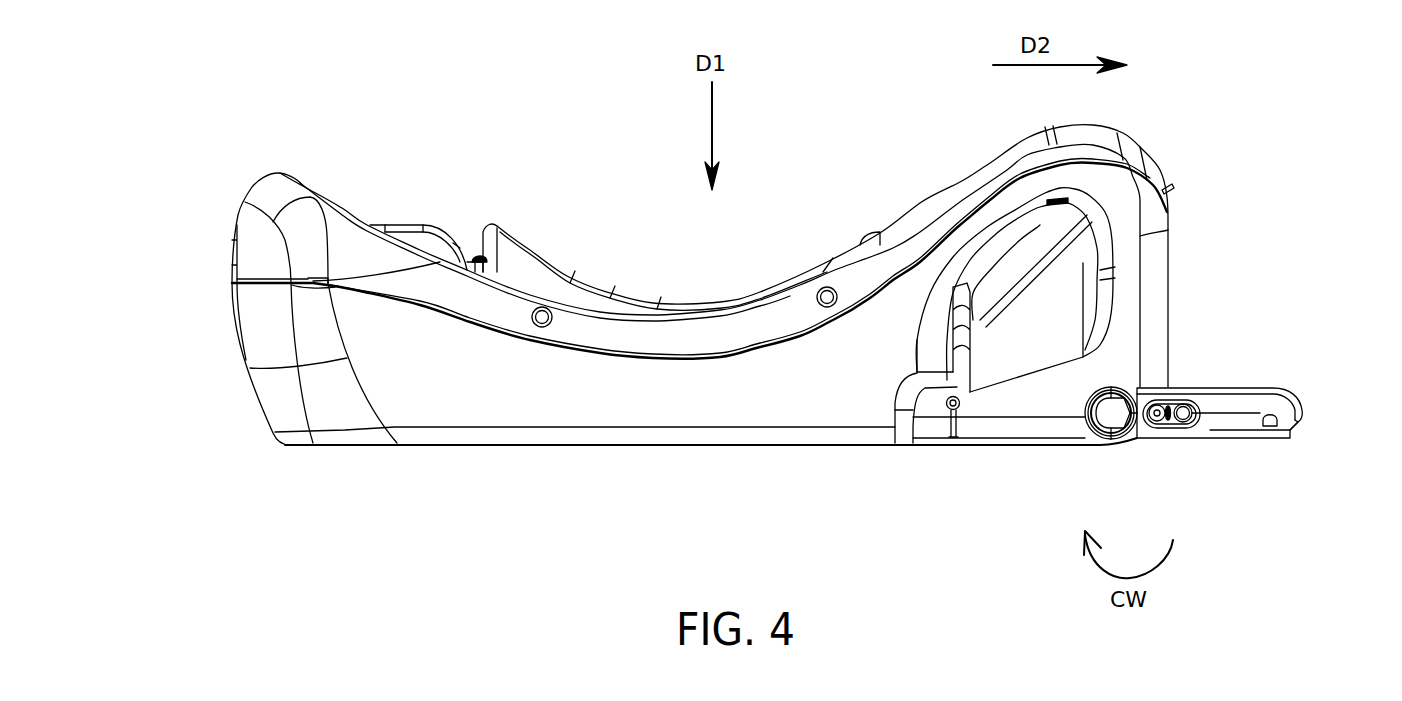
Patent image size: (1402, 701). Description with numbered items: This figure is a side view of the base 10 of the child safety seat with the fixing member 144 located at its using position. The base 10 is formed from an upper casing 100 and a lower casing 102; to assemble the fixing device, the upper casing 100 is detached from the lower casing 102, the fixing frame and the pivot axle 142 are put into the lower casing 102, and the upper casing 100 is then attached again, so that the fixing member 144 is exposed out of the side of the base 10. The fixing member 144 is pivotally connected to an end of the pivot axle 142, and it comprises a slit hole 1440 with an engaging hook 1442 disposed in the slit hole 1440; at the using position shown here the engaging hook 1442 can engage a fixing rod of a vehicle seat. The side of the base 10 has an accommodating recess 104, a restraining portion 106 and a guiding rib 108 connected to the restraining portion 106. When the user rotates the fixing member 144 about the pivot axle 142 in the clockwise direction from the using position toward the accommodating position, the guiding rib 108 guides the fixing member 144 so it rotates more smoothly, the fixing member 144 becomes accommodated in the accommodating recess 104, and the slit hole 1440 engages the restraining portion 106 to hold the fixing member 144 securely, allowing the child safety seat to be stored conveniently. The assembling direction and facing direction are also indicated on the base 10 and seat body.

The base 10 is at (158, 170).
The upper casing 100 is at (245, 220).
The lower casing 102 is at (237, 325).
The accommodating recess 104 is at (1040, 428).
The restraining portion 106 is at (960, 406).
The guiding rib 108 is at (948, 422).
The pivot axle 142 is at (1113, 420).
The fixing member 144 is at (1225, 387).
The slit hole 1440 is at (1298, 421).
The engaging hook 1442 is at (1280, 420).